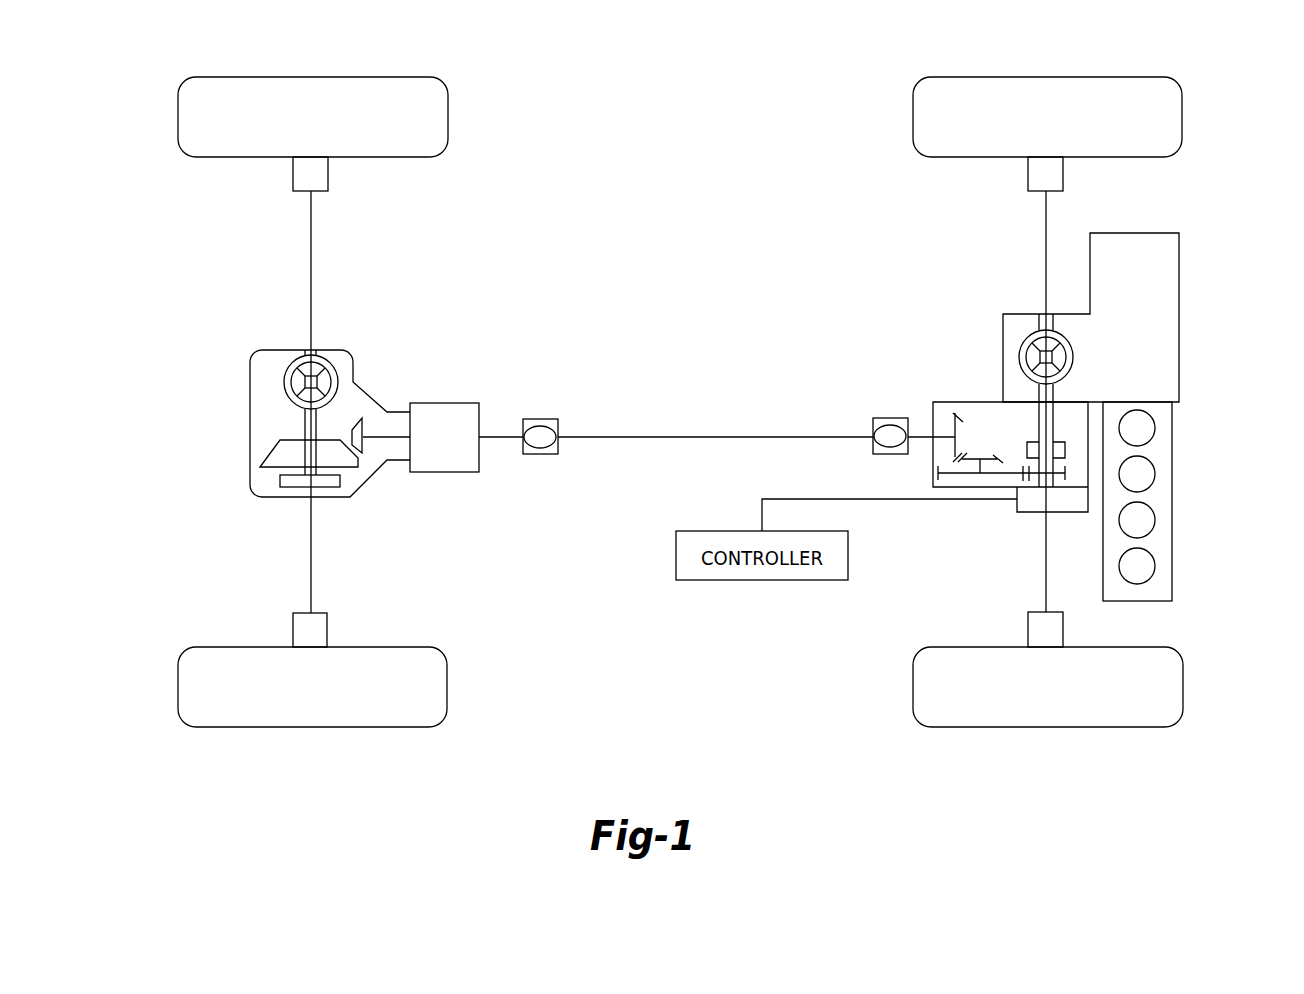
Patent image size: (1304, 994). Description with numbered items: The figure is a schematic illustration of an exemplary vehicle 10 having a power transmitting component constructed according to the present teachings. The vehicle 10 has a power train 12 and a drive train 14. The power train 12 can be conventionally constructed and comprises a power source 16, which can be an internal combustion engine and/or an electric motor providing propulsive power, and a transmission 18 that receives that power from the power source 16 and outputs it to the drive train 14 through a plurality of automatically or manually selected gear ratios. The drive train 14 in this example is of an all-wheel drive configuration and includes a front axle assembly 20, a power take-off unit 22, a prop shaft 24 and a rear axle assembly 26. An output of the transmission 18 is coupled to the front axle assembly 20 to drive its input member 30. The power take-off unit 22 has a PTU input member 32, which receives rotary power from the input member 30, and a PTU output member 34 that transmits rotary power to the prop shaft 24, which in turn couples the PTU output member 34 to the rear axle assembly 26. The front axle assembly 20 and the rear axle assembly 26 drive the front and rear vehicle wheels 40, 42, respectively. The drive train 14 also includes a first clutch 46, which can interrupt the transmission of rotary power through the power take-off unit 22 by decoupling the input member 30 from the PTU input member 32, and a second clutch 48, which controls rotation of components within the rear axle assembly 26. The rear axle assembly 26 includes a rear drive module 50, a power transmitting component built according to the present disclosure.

The vehicle 10 is at (122, 776).
The power train 12 is at (1176, 510).
The drive train 14 is at (706, 368).
The power source 16 is at (1167, 595).
The transmission 18 is at (1170, 248).
The front axle assembly 20 is at (1091, 360).
The power take-off unit 22 is at (1043, 452).
The prop shaft 24 is at (717, 407).
The rear axle assembly 26 is at (310, 440).
The input member 30 is at (1073, 362).
The PTU input member 32 is at (1035, 475).
The PTU output member 34 is at (918, 437).
The front vehicle wheels 40 is at (913, 118).
The rear vehicle wheels 42 is at (178, 118).
The first clutch 46 is at (1065, 450).
The second clutch 48 is at (290, 487).
The rear drive module 50 is at (256, 423).